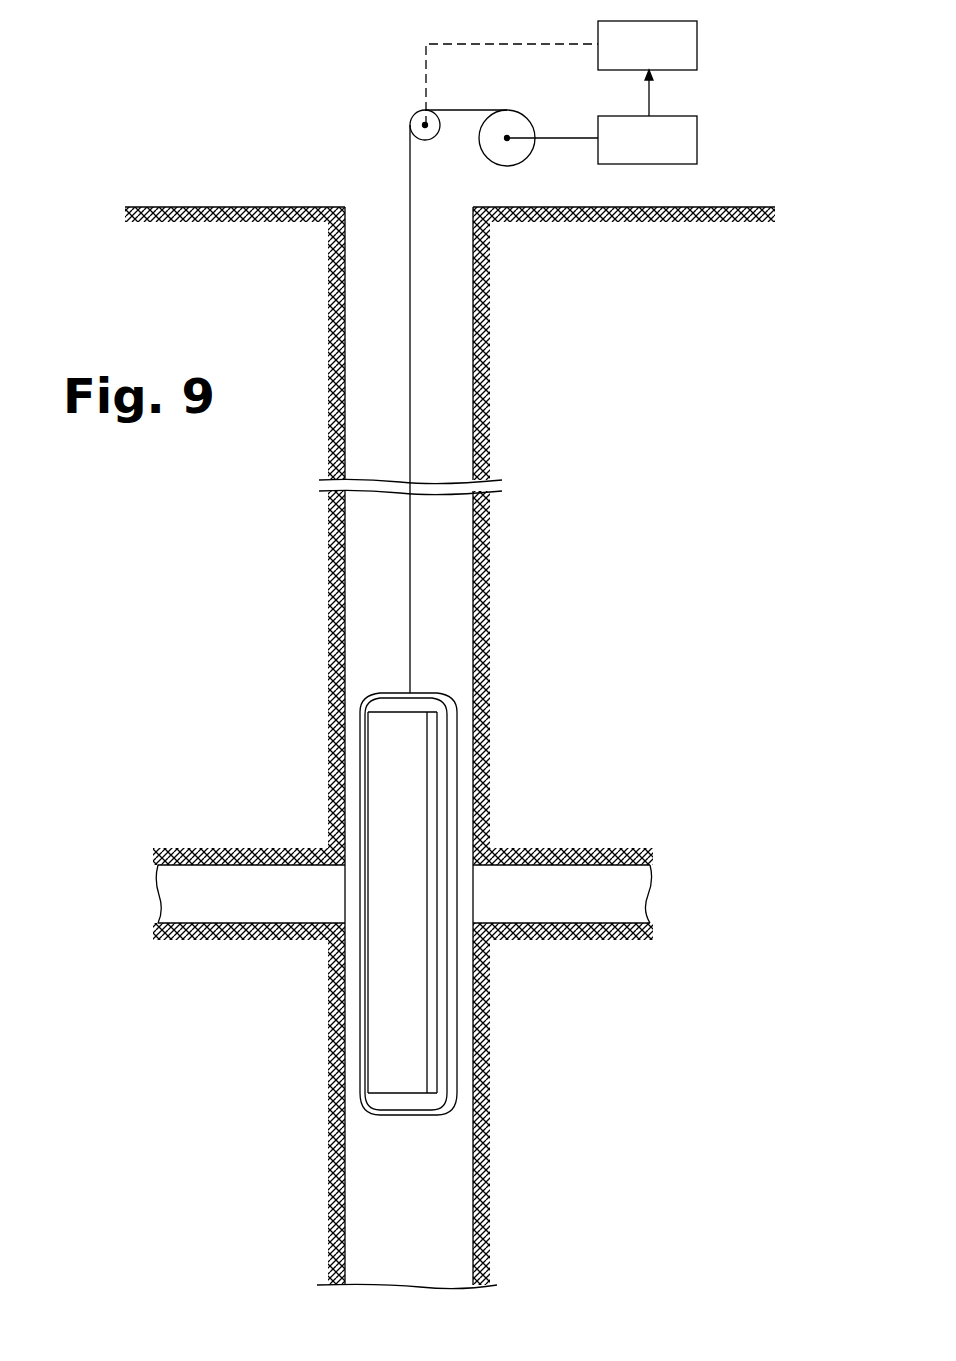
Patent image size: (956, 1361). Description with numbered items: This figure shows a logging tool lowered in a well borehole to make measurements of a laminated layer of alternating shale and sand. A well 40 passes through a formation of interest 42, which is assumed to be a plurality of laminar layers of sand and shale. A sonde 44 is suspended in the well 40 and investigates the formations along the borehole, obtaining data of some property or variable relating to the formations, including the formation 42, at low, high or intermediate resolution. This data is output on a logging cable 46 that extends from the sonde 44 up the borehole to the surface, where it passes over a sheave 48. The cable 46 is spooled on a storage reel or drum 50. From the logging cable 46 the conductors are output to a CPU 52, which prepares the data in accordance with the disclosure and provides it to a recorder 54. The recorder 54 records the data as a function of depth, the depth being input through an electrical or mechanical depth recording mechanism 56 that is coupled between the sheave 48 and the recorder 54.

The well borehole 40 is at (476, 430).
The formation 42 is at (588, 872).
The sonde 44 is at (457, 740).
The logging cable 46 is at (409, 168).
The sheave 48 is at (411, 119).
The storage reel or drum 50 is at (511, 117).
The CPU 52 is at (697, 140).
The recorder 54 is at (697, 46).
The depth recording mechanism 56 is at (493, 44).